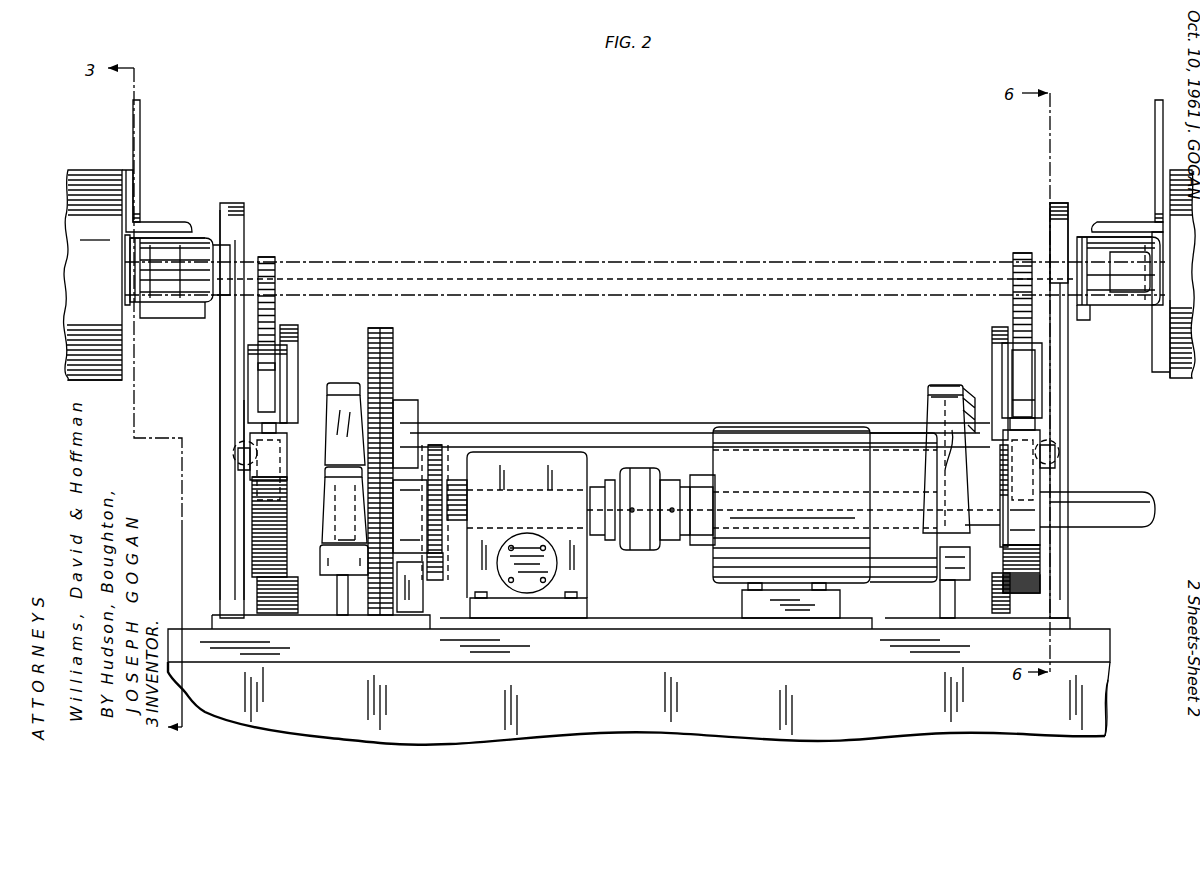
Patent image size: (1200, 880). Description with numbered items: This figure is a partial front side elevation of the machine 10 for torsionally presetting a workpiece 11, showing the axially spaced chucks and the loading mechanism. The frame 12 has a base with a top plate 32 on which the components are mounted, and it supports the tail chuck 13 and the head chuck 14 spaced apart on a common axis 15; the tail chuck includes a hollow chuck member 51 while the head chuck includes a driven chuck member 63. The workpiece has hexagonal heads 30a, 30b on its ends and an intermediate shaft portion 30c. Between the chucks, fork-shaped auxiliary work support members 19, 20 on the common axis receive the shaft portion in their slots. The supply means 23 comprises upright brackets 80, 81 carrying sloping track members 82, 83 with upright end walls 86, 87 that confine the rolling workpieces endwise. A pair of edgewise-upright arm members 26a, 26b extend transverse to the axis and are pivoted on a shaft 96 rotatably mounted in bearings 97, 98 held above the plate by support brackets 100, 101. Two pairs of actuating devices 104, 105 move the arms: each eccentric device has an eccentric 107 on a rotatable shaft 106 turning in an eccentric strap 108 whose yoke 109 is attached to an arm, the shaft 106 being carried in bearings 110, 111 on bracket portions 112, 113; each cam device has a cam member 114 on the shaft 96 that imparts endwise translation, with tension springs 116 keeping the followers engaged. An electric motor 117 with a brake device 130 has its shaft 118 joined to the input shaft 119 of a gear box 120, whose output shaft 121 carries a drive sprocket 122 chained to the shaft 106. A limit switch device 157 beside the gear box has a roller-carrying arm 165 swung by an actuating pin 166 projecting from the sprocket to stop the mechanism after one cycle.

The machine 10 is at (717, 698).
The workpiece 11 is at (744, 264).
The support structure or frame 12 is at (1105, 690).
The tail chuck 13 is at (1182, 172).
The head chuck 14 is at (92, 172).
The common axis 15 is at (576, 277).
The auxiliary work support member 19 is at (1088, 322).
The auxiliary work support member 20 is at (168, 318).
The supply means 23 is at (244, 218).
The arm member 26a is at (1000, 298).
The arm member 26b is at (275, 302).
The head of workpiece 30a is at (1130, 235).
The head of workpiece 30b is at (166, 236).
The intermediate shaft portion 30c is at (812, 262).
The top wall or plate 32 is at (1088, 632).
The hollow chuck member 51 is at (1178, 385).
The driven chuck member 63 is at (88, 380).
The upright bracket 80 is at (1068, 420).
The upright bracket 81 is at (220, 415).
The track member 82 is at (1060, 203).
The track member 83 is at (234, 205).
The upright end wall 86 is at (1153, 128).
The upright end wall 87 is at (138, 130).
The shaft 96 is at (662, 433).
The bearing 97 is at (942, 388).
The bearing 98 is at (352, 383).
The support bracket 100 is at (915, 618).
The support bracket 101 is at (318, 617).
The actuating device 104 is at (252, 517).
The actuating device 105 is at (296, 347).
The rotatable shaft 106 is at (1118, 492).
The eccentric 107 is at (1040, 566).
The eccentric strap 108 is at (1040, 586).
The yoke 109 is at (1035, 385).
The bearing 110 is at (949, 482).
The bearing 111 is at (345, 462).
The bracket portion 112 is at (948, 615).
The bracket portion 113 is at (340, 604).
The cam member 114 is at (290, 328).
The tension spring 116 is at (240, 442).
The electric motor 117 is at (780, 428).
The motor shaft 118 is at (700, 493).
The input shaft 119 is at (598, 497).
The gear box 120 is at (515, 452).
The output shaft 121 is at (460, 500).
The drive sprocket 122 is at (436, 582).
The brake device 130 is at (888, 440).
The limit switch device 157 is at (415, 608).
The roller-carrying arm 165 is at (398, 548).
The actuating pin 166 is at (428, 536).